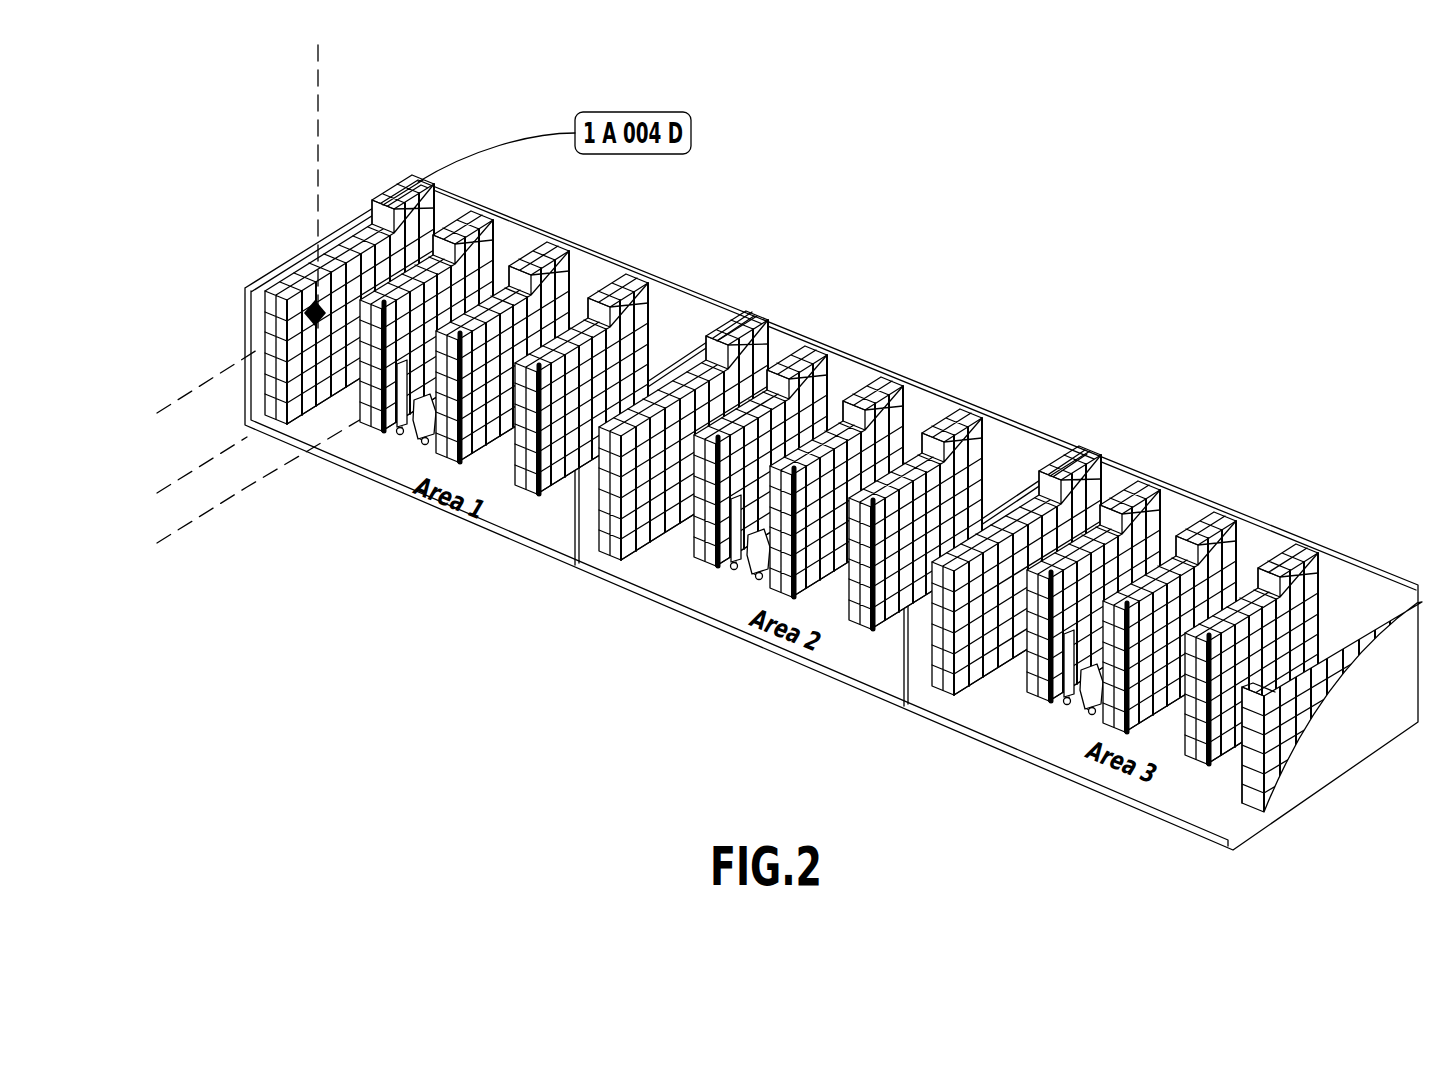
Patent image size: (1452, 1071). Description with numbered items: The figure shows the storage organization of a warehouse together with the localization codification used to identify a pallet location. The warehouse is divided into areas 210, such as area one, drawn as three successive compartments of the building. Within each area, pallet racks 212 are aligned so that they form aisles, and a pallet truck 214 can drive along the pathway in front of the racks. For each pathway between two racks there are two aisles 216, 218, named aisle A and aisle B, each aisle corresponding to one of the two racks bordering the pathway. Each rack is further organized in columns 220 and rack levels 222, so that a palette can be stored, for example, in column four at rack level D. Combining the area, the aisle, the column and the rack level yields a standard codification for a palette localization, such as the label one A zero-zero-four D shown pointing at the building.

The areas 210 is at (404, 511).
The pallet racks 212 is at (1298, 712).
The pallet truck 214 is at (1058, 706).
The aisle 216 is at (163, 442).
The aisle 218 is at (162, 507).
The columns 220 is at (307, 268).
The rack levels 222 is at (182, 347).